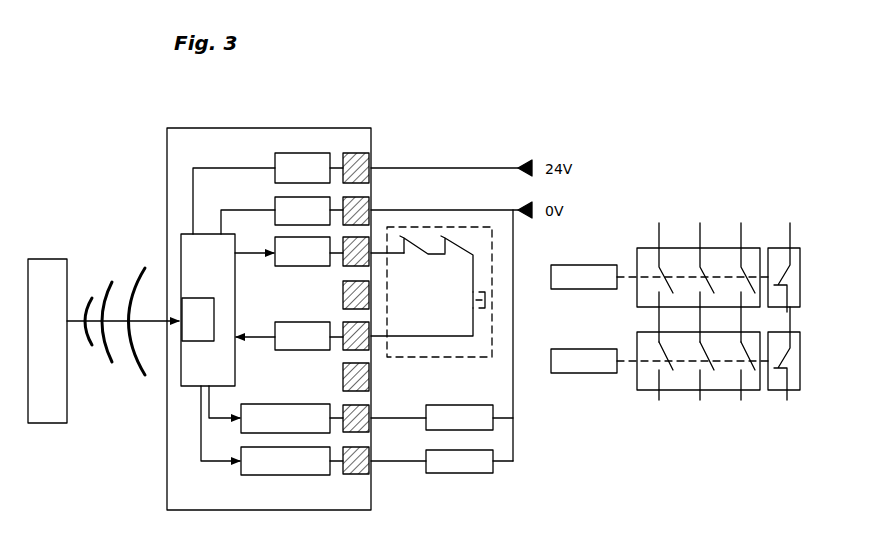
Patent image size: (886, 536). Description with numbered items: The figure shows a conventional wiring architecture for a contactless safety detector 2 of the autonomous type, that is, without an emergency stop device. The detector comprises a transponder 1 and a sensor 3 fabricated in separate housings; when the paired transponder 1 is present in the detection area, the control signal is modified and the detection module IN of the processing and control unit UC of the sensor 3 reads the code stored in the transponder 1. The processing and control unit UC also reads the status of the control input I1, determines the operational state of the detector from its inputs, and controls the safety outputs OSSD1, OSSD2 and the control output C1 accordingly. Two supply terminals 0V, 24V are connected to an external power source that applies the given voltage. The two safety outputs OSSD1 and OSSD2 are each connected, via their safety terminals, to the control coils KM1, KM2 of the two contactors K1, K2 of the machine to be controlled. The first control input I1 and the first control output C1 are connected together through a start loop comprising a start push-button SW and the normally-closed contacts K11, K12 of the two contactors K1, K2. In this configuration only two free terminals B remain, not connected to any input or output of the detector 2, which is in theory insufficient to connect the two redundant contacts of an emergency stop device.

The transponder 1 is at (50, 259).
The safety detector 2 is at (163, 107).
The sensor 3 is at (227, 128).
The free terminals B is at (368, 160).
The processing and control unit UC is at (208, 310).
The detection module IN is at (198, 319).
The supply terminal 24V is at (268, 193).
The supply terminal 0V is at (282, 215).
The control output C1 is at (289, 251).
The control input I1 is at (289, 336).
The safety output OSSD1 is at (276, 409).
The safety output OSSD2 is at (272, 430).
The normally-closed contact K11 is at (773, 198).
The normally-closed contact K12 is at (783, 440).
The start push-button SW is at (465, 303).
The control coil KM1 is at (569, 347).
The control coil KM2 is at (569, 411).
The contactor K1 is at (708, 248).
The contactor K2 is at (717, 390).